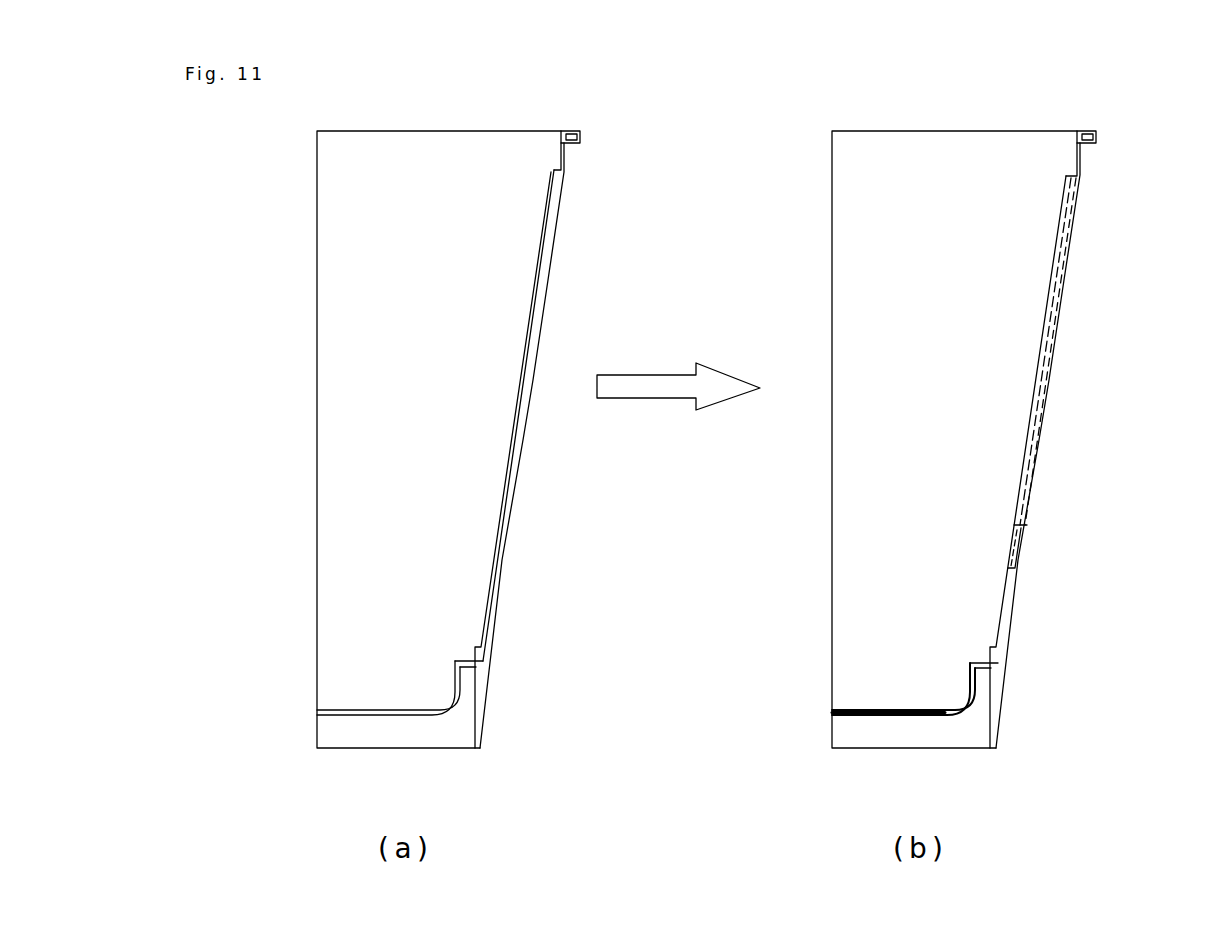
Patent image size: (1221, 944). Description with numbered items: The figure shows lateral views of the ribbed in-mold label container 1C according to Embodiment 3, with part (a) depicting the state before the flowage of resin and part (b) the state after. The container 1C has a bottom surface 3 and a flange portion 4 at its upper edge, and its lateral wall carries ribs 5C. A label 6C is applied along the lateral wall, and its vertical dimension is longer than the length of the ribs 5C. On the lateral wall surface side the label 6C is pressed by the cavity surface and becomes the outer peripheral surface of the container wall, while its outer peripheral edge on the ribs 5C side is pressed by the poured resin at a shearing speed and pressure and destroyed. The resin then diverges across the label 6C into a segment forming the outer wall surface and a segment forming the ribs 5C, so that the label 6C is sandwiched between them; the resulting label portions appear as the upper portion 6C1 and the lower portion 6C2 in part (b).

The ribbed in-mold label container 1C is at (553, 491).
The bottom surface 3 is at (397, 719).
The flange portion 4 is at (568, 130).
The ribs 5C is at (552, 253).
The label 6C is at (531, 327).
The upper inner sheet portion 6C1 is at (1027, 527).
The lower inner sheet portion 6C2 is at (1015, 571).